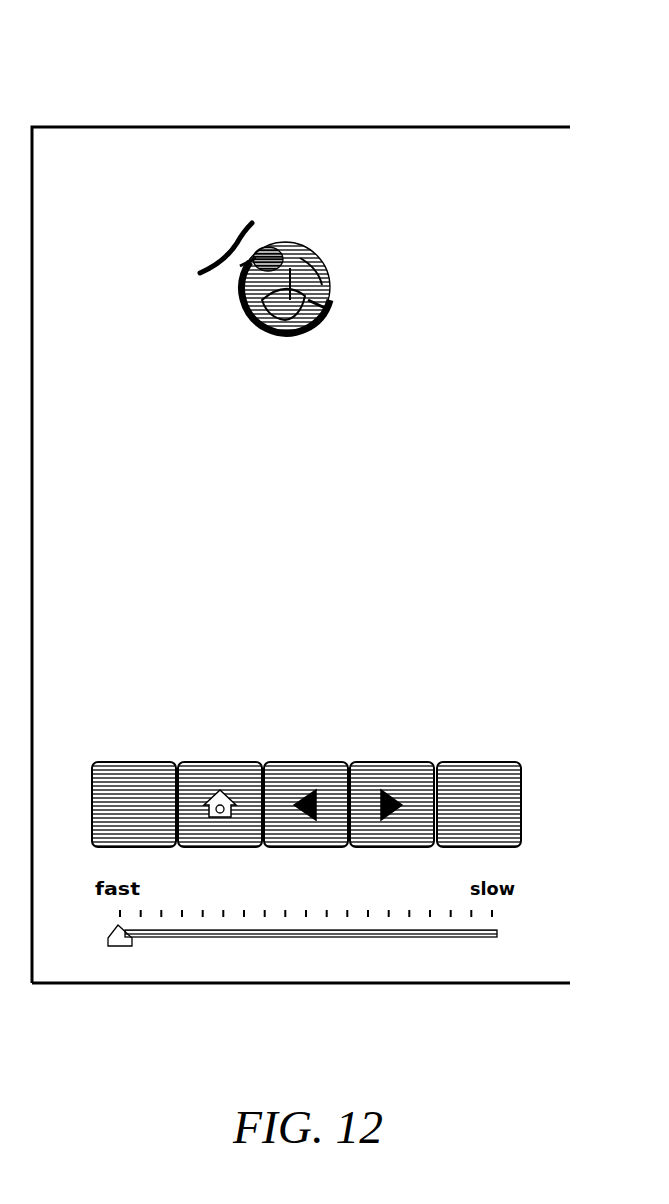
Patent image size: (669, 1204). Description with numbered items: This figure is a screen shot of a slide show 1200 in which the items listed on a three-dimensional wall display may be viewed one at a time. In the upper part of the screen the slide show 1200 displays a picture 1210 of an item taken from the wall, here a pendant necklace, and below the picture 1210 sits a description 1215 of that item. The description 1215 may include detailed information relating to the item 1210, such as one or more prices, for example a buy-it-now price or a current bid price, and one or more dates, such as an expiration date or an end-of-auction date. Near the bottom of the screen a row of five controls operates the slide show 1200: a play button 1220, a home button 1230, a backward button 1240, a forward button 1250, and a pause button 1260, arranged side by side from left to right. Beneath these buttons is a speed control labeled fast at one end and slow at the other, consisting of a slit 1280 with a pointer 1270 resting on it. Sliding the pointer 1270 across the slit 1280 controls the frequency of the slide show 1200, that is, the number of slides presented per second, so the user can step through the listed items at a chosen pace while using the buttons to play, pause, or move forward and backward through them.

The slide show 1200 is at (535, 60).
The picture 1210 is at (303, 248).
The description 1215 is at (335, 443).
The play button 1220 is at (127, 761).
The home button 1230 is at (214, 760).
The backward button 1240 is at (300, 758).
The forward button 1250 is at (381, 760).
The pause button 1260 is at (465, 760).
The pointer 1270 is at (115, 932).
The slit 1280 is at (330, 934).